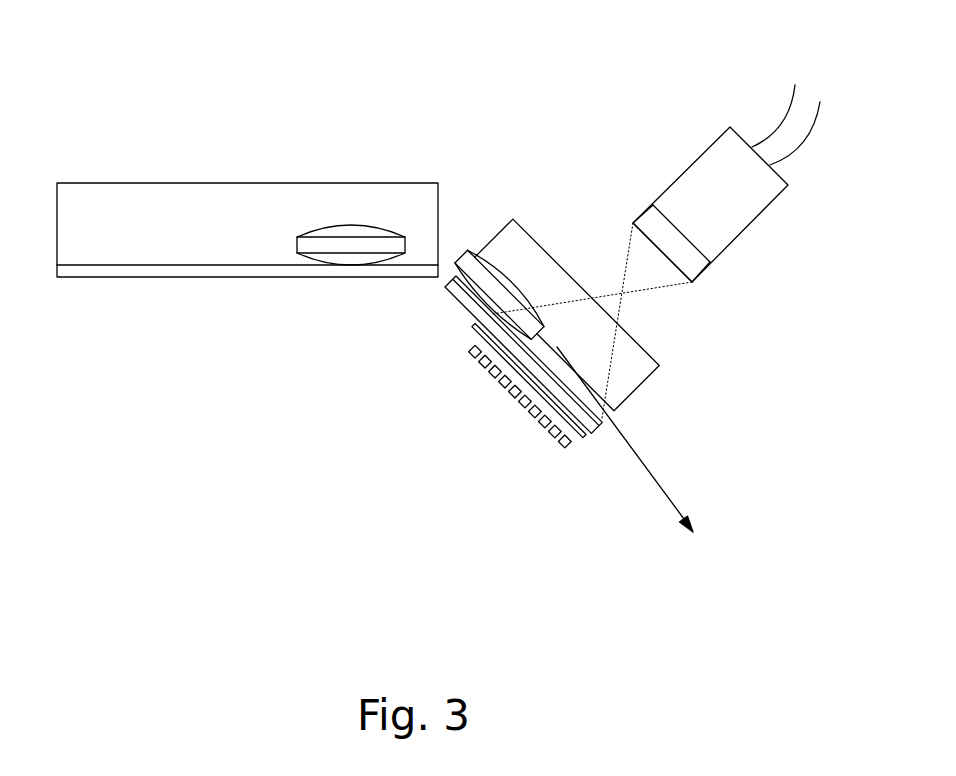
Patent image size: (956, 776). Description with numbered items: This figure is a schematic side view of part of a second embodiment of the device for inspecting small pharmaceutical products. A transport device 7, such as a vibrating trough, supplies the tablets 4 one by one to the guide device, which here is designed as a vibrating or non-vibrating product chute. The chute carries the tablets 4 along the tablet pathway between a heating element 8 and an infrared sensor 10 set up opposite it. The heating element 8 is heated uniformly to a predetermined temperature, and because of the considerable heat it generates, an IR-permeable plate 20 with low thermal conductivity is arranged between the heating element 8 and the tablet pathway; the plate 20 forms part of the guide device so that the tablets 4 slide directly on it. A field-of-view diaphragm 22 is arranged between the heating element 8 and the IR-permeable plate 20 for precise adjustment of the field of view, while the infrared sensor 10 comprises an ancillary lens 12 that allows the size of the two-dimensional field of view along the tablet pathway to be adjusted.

The transport device 7 is at (93, 210).
The tablets 4 is at (503, 298).
The IR-permeable plate 20 is at (590, 440).
The field-of-view diaphragm 22 is at (475, 330).
The heating element 8 is at (517, 394).
The infrared sensor 10 is at (710, 198).
The ancillary lens 12 is at (690, 270).